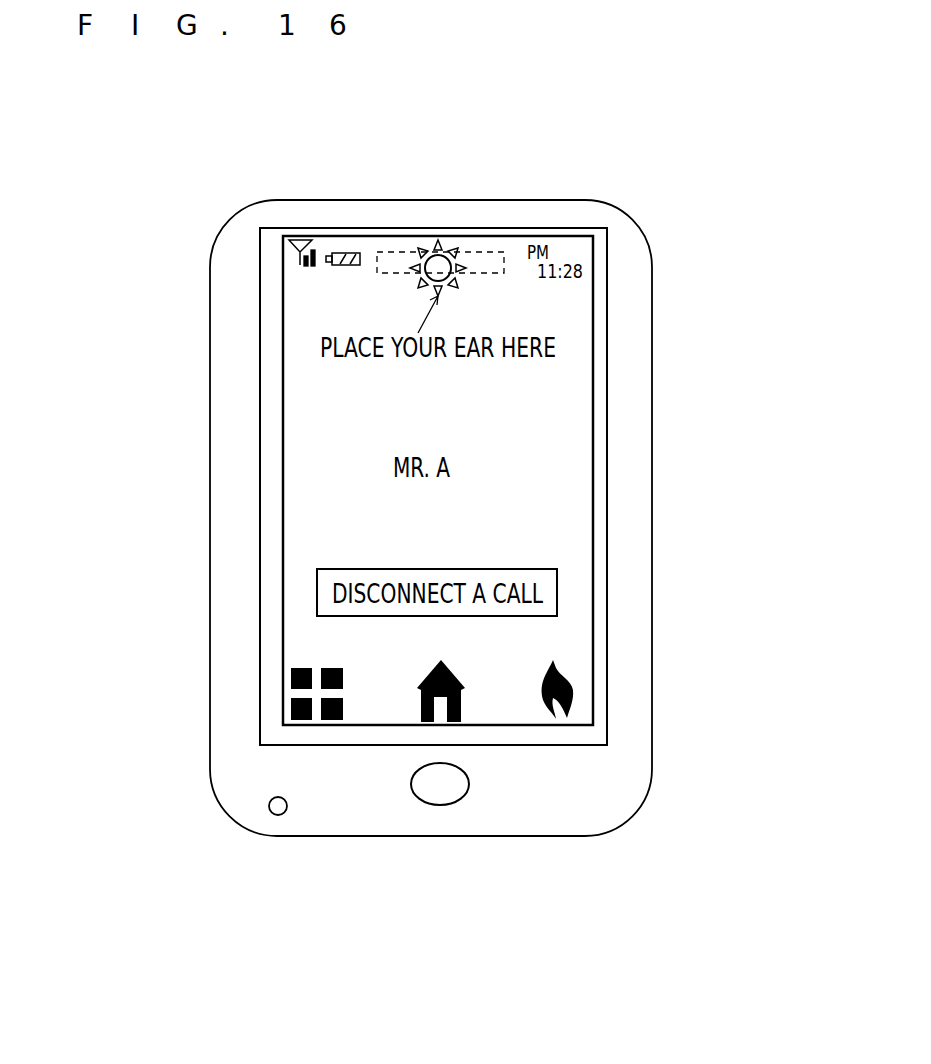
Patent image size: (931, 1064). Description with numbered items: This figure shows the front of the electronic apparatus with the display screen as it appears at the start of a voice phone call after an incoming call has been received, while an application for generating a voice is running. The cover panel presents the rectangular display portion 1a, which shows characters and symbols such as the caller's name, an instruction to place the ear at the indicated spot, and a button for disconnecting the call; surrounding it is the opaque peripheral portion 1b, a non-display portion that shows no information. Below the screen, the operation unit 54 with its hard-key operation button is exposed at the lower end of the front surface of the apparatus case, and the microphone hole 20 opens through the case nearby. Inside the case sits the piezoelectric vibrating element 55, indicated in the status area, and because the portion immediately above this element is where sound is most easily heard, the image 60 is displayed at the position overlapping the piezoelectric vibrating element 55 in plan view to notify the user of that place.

The display portion 1a is at (594, 566).
The peripheral portion 1b is at (601, 480).
The microphone hole 20 is at (278, 815).
The operation unit 54 is at (441, 792).
The piezoelectric vibrating element 55 is at (478, 260).
The image 60 is at (434, 263).